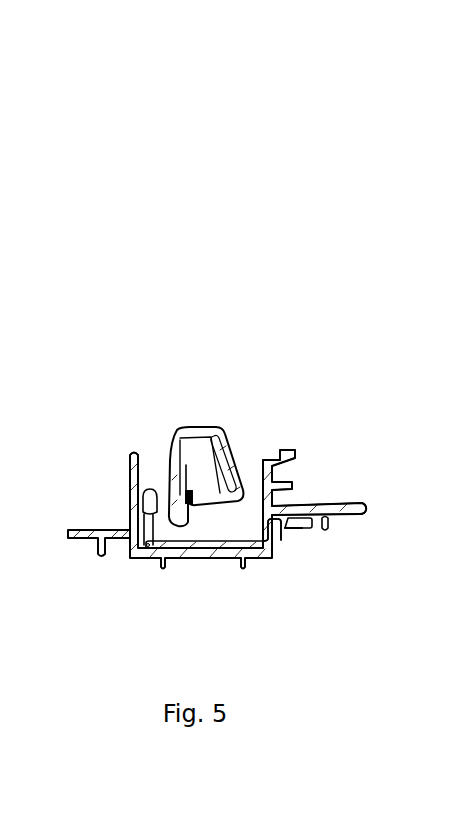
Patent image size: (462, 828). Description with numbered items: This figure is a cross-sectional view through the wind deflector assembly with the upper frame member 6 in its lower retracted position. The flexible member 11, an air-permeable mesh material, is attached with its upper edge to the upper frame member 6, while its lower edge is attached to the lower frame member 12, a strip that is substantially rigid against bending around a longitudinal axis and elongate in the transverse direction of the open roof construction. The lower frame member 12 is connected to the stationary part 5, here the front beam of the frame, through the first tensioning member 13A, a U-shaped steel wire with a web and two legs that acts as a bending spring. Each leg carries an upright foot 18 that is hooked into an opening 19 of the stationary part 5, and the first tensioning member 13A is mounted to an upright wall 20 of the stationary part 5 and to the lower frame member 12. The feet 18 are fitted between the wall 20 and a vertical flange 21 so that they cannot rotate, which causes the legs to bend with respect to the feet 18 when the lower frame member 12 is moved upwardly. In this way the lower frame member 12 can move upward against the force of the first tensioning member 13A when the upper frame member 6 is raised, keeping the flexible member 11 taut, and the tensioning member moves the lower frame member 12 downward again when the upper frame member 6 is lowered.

The stationary part 5 is at (138, 552).
The upper frame member 6 is at (199, 429).
The flexible member 11 is at (167, 505).
The lower frame member 12 is at (143, 499).
The first tensioning member 13A is at (198, 544).
The upright foot 18 is at (282, 528).
The opening 19 is at (265, 545).
The upright wall 20 is at (298, 499).
The vertical flange 21 is at (314, 521).